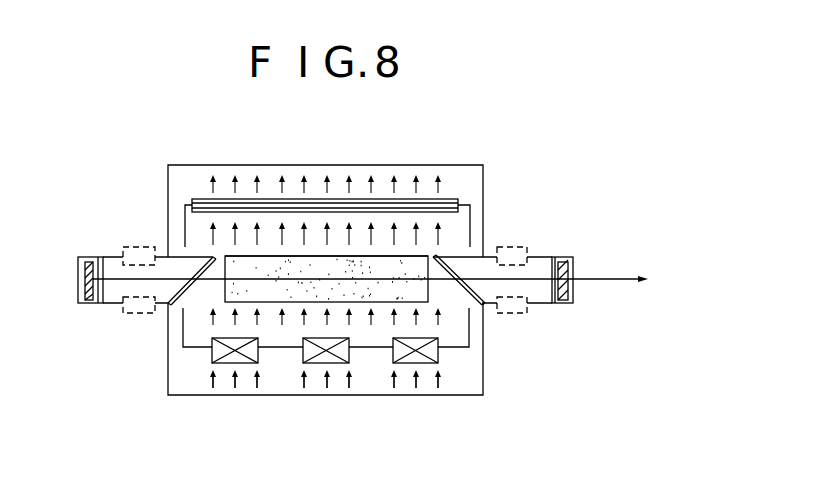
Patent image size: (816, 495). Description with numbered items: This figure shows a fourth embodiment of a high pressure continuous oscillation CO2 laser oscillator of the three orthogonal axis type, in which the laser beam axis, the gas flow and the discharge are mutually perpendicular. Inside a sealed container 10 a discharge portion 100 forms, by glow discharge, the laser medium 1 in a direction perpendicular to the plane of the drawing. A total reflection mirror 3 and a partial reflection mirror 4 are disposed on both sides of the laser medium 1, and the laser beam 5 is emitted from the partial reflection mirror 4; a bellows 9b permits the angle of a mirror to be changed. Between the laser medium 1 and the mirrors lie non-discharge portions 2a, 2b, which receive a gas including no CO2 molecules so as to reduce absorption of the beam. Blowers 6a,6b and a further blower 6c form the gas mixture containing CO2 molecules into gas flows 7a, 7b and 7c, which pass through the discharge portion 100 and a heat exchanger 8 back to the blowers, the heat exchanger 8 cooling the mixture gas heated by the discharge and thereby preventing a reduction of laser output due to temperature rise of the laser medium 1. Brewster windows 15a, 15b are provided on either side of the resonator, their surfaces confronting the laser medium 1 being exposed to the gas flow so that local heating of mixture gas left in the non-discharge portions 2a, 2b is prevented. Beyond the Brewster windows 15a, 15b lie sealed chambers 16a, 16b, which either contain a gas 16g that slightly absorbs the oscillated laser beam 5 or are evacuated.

The laser medium 1 is at (410, 268).
The discharge portion 100 is at (267, 256).
The non-discharge portion 2a is at (203, 290).
The non-discharge portion 2b is at (450, 292).
The total reflection mirror 3 is at (82, 290).
The partial reflection mirror 4 is at (562, 302).
The laser beam 5 is at (605, 280).
The blowers 6a,6b is at (304, 363).
The blower 6c is at (392, 358).
The gas flow 7a is at (257, 389).
The gas flow 7b is at (349, 389).
The gas flow 7c is at (438, 389).
The heat exchanger 8 is at (455, 203).
The bellows 9b is at (130, 247).
The container 10 is at (483, 378).
The Brewster window 15a is at (193, 272).
The Brewster window 15b is at (475, 287).
The sealed chamber 16a is at (112, 263).
The sealed chamber 16b is at (543, 265).
The gas 16g is at (109, 296).